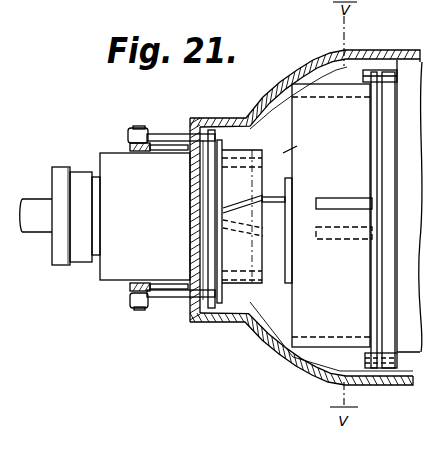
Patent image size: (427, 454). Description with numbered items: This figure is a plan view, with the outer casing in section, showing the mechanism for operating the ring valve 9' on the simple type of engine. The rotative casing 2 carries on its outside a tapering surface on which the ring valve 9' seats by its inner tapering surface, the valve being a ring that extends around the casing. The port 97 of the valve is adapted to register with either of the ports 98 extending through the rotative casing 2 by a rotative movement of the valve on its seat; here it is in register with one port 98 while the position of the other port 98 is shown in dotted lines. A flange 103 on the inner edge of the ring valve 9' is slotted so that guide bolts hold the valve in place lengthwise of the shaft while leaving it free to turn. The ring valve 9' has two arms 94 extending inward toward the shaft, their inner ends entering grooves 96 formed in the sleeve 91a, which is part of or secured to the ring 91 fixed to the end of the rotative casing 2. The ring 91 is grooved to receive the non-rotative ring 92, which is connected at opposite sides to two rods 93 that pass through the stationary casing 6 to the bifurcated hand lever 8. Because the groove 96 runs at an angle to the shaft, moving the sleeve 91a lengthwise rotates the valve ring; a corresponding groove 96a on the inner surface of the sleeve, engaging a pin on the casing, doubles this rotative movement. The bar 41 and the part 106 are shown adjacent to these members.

The rotative casing 2 is at (409, 206).
The stationary casing 6 is at (337, 58).
The bifurcated lever 8 is at (128, 148).
The ring valve 9' is at (331, 215).
The bar 41 is at (260, 237).
The ring 91 is at (223, 150).
The sleeve or arm 91a is at (257, 160).
The non-rotative ring 92 is at (216, 296).
The rods 93 is at (177, 297).
The arms 94 is at (268, 204).
The grooves 96 is at (244, 207).
The corresponding groove 96a is at (246, 232).
The port 97 is at (328, 198).
The ports 98 is at (333, 239).
The flange 103 is at (372, 148).
The plate 106 is at (390, 172).